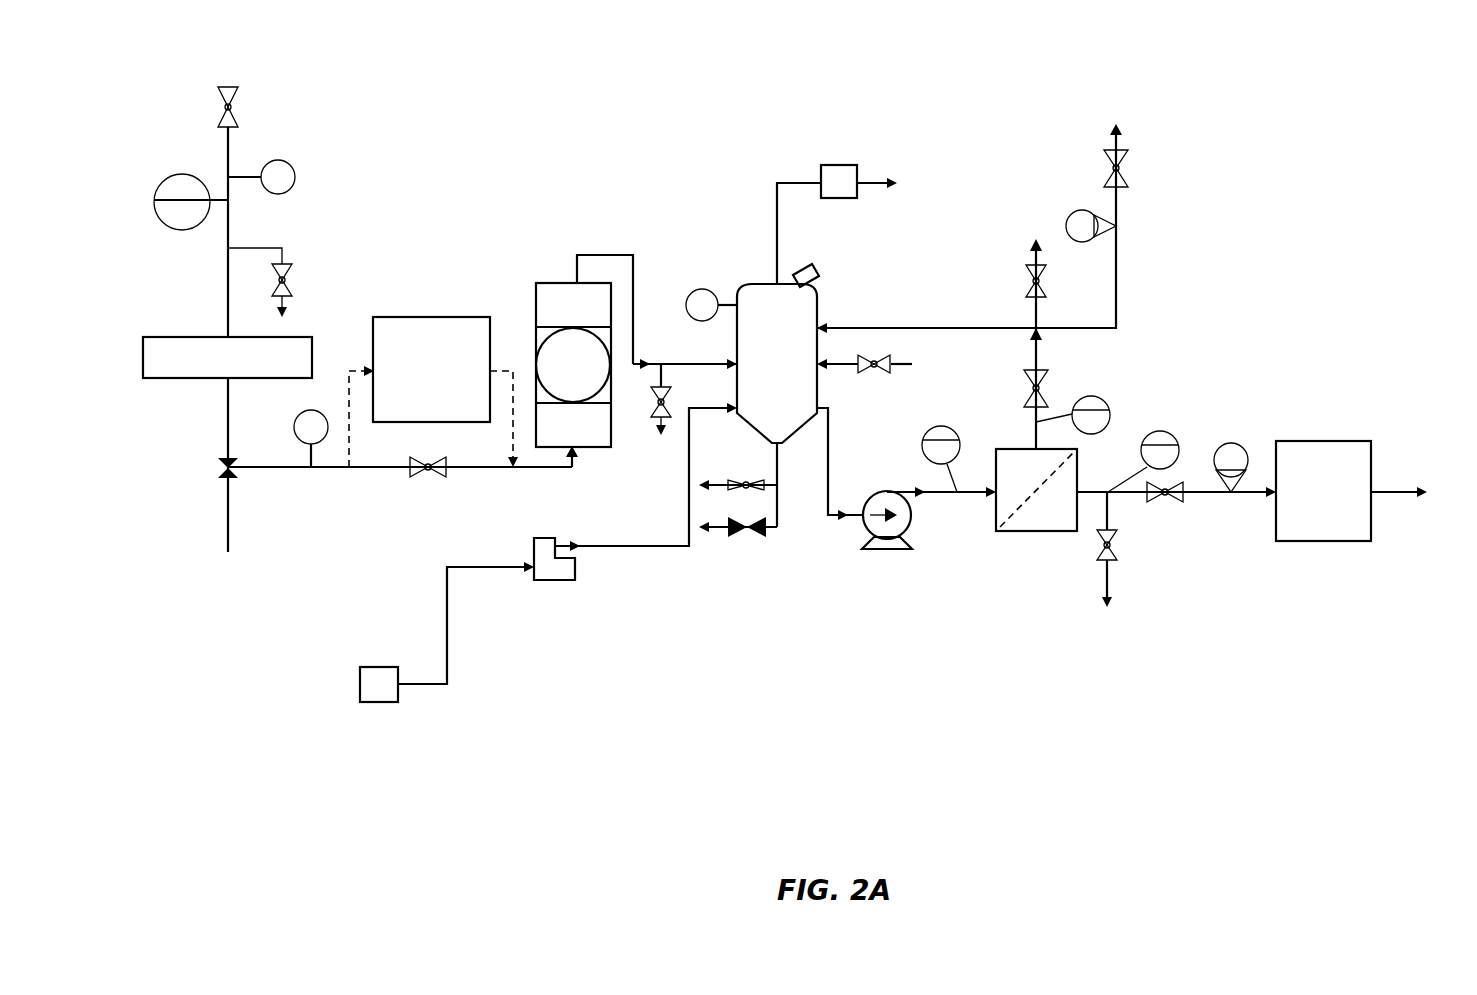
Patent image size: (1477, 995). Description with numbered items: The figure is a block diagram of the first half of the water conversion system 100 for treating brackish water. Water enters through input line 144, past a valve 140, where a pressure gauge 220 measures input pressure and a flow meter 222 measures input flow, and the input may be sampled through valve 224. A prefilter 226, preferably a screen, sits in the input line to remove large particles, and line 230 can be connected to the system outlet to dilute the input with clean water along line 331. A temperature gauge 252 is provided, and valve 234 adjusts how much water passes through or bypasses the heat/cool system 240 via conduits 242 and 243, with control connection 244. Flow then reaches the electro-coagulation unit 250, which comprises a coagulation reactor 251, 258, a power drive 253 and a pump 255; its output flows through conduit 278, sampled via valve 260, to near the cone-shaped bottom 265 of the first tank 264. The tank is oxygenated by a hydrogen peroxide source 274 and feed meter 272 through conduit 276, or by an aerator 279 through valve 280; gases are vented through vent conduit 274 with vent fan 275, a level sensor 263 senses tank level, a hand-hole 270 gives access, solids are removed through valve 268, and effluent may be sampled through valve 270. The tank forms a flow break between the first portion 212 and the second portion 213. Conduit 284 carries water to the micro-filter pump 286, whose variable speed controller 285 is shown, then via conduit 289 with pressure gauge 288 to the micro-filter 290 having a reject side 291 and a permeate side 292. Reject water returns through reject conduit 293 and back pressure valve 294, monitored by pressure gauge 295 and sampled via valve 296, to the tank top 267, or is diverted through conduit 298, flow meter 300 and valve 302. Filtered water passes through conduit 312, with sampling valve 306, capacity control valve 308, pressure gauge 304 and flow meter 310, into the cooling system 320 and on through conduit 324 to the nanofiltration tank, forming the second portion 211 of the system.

The water conversion system 100 is at (525, 796).
The inlet valve 140 is at (238, 110).
The input line 144 is at (228, 158).
The second portion 211 is at (1240, 125).
The first portion (EC stage) 212 is at (612, 168).
The second portion 213 is at (1000, 136).
The pressure gauge 220 is at (296, 172).
The flow meter 222 is at (172, 227).
The valve 224 is at (290, 270).
The prefilter 226 is at (180, 337).
The line 230 is at (228, 510).
The valve 234 is at (426, 478).
The heat/cool system 240 is at (426, 317).
The conduit 242 is at (349, 414).
The conduit 243 is at (513, 414).
The control line 244 is at (512, 362).
The electro-coagulation unit 250 is at (548, 283).
The electrochemical cell 251 is at (538, 330).
The temperature sensor 252 is at (302, 412).
The power drive 253 is at (612, 297).
The pump 255 is at (598, 447).
The coagulation reactor 258 is at (614, 333).
The valve 260 is at (668, 408).
The level sensor 263 is at (704, 289).
The first tank 264 is at (802, 316).
The bottom 265 is at (798, 437).
The top 267 is at (766, 285).
The valve 268 is at (752, 537).
The hand-hole / sampling valve 270 is at (806, 276).
The feed meter 272 is at (575, 580).
The hydrogen peroxide source / vent conduit 274 is at (776, 208).
The vent fan 275 is at (839, 165).
The conduit 276 is at (660, 548).
The conduit 278 is at (702, 364).
The aerator 279 is at (958, 350).
The valve 280 is at (876, 373).
The conduit 284 is at (828, 450).
The variable speed controller 285 is at (878, 551).
The micro-filter pump 286 is at (912, 534).
The pressure gauge 288 is at (940, 426).
The conduit 289 is at (970, 492).
The micro-filter 290 is at (1078, 470).
The reject side 291 is at (1036, 490).
The permeate side 292 is at (1031, 537).
The reject conduit 293 is at (1036, 440).
The back pressure valve 294 is at (1048, 385).
The pressure gauge 295 is at (1104, 400).
The valve 296 is at (1046, 290).
The conduit 298 is at (1117, 255).
The flow meter 300 is at (1072, 213).
The valve 302 is at (1128, 158).
The pressure gauge 304 is at (1170, 435).
The valve 306 is at (1095, 558).
The second tank capacity control valve 308 is at (1172, 502).
The flow meter 310 is at (1240, 445).
The conduit 312 is at (1253, 495).
The cooling system 320 is at (1333, 441).
The conduit 324 is at (1400, 490).
The line 331 is at (283, 467).